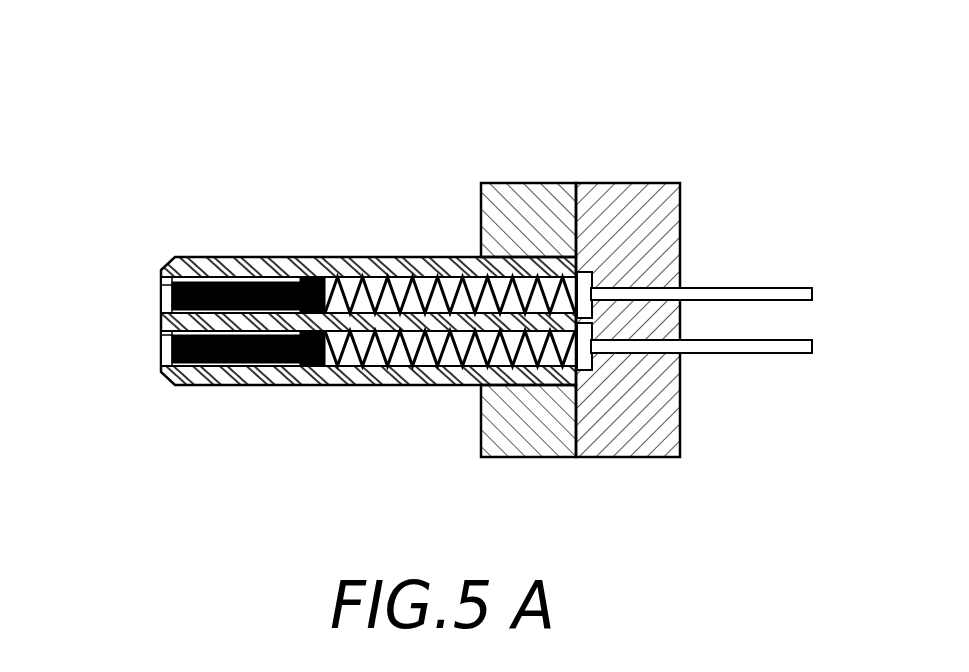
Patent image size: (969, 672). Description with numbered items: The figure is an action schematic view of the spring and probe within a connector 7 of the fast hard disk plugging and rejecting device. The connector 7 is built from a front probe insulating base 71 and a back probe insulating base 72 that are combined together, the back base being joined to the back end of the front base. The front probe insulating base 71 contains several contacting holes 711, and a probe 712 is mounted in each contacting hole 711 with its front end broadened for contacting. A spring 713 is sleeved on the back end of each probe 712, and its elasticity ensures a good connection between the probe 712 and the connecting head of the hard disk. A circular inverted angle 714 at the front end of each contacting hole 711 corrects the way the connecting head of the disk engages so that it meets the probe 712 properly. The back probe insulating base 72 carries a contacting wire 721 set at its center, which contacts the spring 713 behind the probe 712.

The connector 7 is at (423, 245).
The front probe insulating base 71 is at (478, 214).
The contacting hole 711 is at (375, 282).
The probe 712 is at (161, 297).
The spring 713 is at (440, 282).
The circular inverted angle 714 is at (161, 283).
The back probe insulating base 72 is at (675, 182).
The contacting wire 721 is at (712, 288).